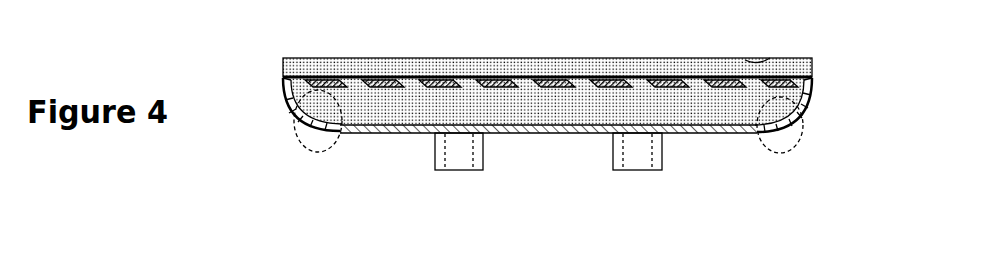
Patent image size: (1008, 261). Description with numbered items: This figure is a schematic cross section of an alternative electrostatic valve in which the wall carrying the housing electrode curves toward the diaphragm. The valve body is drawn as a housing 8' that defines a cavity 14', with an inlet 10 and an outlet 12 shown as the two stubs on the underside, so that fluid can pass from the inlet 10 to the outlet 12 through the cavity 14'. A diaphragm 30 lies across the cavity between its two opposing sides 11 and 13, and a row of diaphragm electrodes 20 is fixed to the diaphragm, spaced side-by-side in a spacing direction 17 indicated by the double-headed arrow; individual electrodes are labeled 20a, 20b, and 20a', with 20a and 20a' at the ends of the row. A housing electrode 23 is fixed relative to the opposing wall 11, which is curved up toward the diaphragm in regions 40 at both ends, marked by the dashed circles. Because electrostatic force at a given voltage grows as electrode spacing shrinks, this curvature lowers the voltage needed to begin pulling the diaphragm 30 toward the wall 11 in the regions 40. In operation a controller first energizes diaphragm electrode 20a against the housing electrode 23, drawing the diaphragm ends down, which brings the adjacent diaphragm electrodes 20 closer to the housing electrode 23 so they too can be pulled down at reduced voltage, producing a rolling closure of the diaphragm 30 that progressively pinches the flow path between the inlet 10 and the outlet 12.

The diaphragm electrode 20a is at (282, 67).
The diaphragm electrodes 20 is at (397, 78).
The intermediate portion of upper layer 20b is at (495, 78).
The diaphragm 30 is at (548, 77).
The spacing direction 17 is at (743, 40).
The opposing side 13 is at (757, 61).
The second end portion of fluid-filled enclosure 20a' is at (828, 70).
The fluid chamber 14' is at (547, 102).
The support device 8' is at (251, 132).
The regions 40 is at (300, 145).
The inlet 10 is at (463, 160).
The housing electrode 23 is at (540, 133).
The outlet 12 is at (643, 153).
The opposing side 11 is at (717, 127).